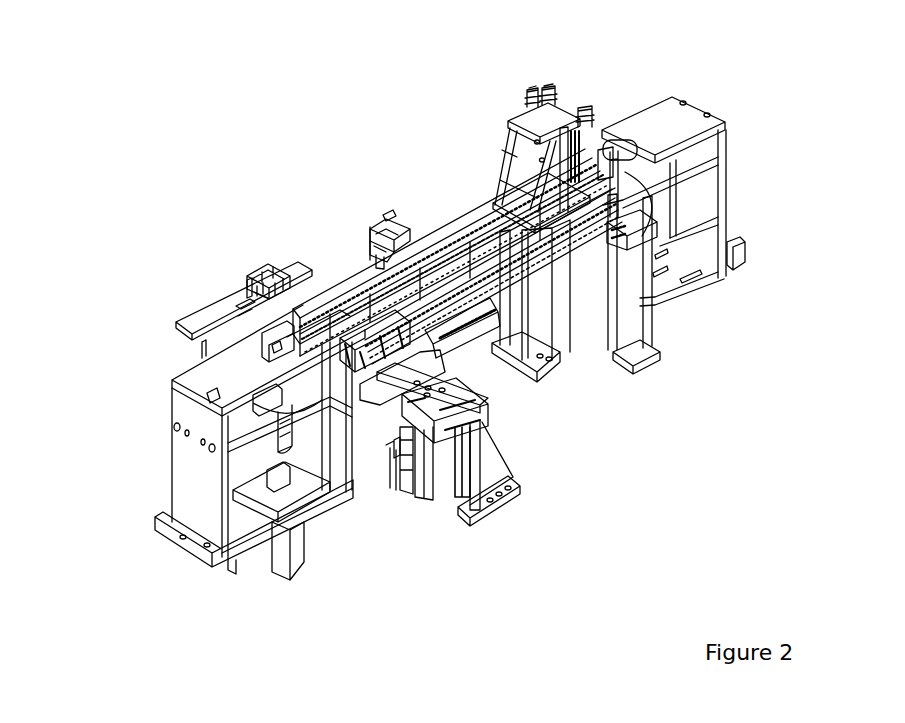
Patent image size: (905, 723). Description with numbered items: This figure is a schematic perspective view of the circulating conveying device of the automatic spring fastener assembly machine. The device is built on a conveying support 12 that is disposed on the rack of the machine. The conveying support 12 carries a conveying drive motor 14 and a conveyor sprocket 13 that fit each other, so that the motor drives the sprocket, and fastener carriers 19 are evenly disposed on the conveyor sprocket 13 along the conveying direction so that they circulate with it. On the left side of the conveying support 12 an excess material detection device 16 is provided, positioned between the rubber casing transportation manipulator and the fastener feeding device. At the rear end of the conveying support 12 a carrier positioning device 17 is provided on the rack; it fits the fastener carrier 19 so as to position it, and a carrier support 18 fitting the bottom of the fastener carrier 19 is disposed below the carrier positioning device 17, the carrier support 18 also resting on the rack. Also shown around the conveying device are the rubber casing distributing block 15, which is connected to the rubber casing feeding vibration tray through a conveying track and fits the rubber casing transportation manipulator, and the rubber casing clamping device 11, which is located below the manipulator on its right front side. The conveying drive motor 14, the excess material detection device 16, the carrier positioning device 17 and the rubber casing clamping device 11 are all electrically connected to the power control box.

The rubber casing clamping device 11 is at (427, 488).
The conveying support 12 is at (197, 470).
The conveyor sprocket 13 is at (292, 398).
The conveying drive motor 14 is at (297, 540).
The rubber casing distributing block 15 is at (248, 300).
The excess material detection device 16 is at (380, 218).
The carrier positioning device 17 is at (527, 165).
The carrier support 18 is at (752, 435).
The fastener carrier 19 is at (532, 373).